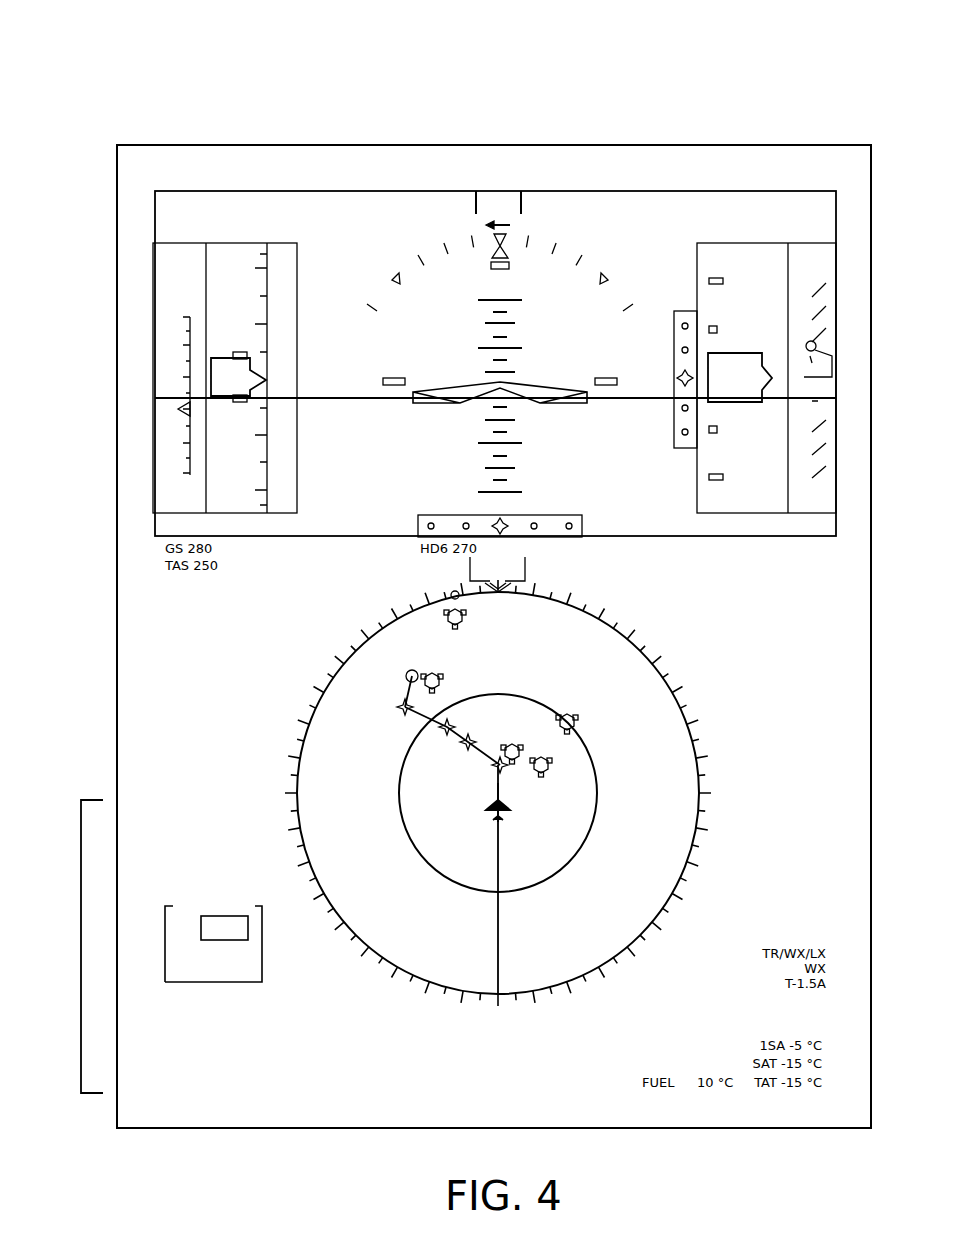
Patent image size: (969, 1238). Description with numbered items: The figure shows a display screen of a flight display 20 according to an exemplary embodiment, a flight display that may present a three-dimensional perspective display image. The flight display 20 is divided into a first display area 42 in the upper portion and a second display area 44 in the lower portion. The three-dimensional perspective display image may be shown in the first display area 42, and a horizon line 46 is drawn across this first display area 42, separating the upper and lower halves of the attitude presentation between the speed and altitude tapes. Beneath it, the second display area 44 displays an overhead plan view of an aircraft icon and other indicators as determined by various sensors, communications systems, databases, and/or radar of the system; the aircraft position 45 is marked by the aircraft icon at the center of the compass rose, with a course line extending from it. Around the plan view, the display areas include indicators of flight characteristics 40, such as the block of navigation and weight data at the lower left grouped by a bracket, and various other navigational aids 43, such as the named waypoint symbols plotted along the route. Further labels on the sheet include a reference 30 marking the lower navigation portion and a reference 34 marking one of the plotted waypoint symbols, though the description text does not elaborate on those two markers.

The flight display 20 is at (449, 95).
The first display area 42 is at (371, 191).
The horizon line 46 is at (343, 400).
The navigation display 30 is at (270, 594).
The waypoint symbol 34 is at (428, 676).
The navigational aids 43 is at (568, 716).
The second display area 44 is at (727, 655).
The aircraft position 45 is at (504, 814).
The flight characteristics 40 is at (81, 932).